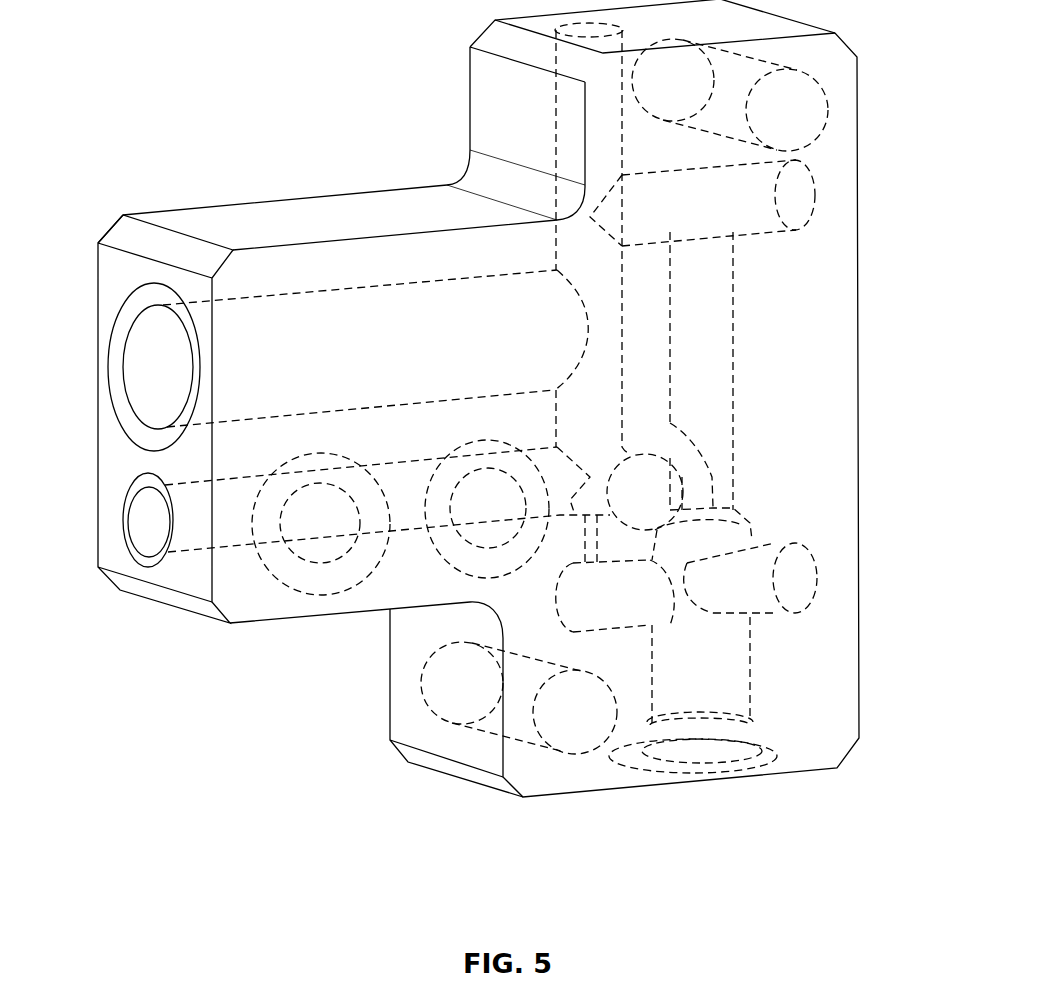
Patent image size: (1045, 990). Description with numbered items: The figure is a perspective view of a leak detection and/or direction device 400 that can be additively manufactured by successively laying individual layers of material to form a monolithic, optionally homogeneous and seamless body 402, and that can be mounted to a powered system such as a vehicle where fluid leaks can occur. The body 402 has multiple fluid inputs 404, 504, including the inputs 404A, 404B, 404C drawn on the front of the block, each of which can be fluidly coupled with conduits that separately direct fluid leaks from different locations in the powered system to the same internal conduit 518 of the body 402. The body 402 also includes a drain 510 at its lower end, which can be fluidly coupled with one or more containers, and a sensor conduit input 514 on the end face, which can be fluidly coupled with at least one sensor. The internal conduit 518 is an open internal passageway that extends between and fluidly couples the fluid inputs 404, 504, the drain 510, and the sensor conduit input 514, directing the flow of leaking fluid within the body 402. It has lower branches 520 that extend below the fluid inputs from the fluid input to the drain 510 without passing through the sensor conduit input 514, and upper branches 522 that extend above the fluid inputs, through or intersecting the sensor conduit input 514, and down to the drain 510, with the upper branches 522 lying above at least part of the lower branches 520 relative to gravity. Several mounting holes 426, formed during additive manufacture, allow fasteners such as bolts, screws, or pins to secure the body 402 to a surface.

The leak detection and/or direction device 400 is at (256, 81).
The body 402 is at (790, 338).
The fluid inputs 404 is at (286, 517).
The fluid input 404A is at (317, 515).
The fluid input 404B is at (460, 500).
The fluid input 404C is at (645, 472).
The mounting holes 426 is at (785, 107).
The fluid input 504 is at (150, 523).
The drain 510 is at (697, 752).
The sensor conduit input 514 is at (150, 368).
The internal conduit 518 is at (733, 437).
The lower branches 520 is at (592, 537).
The upper branches 522 is at (187, 503).